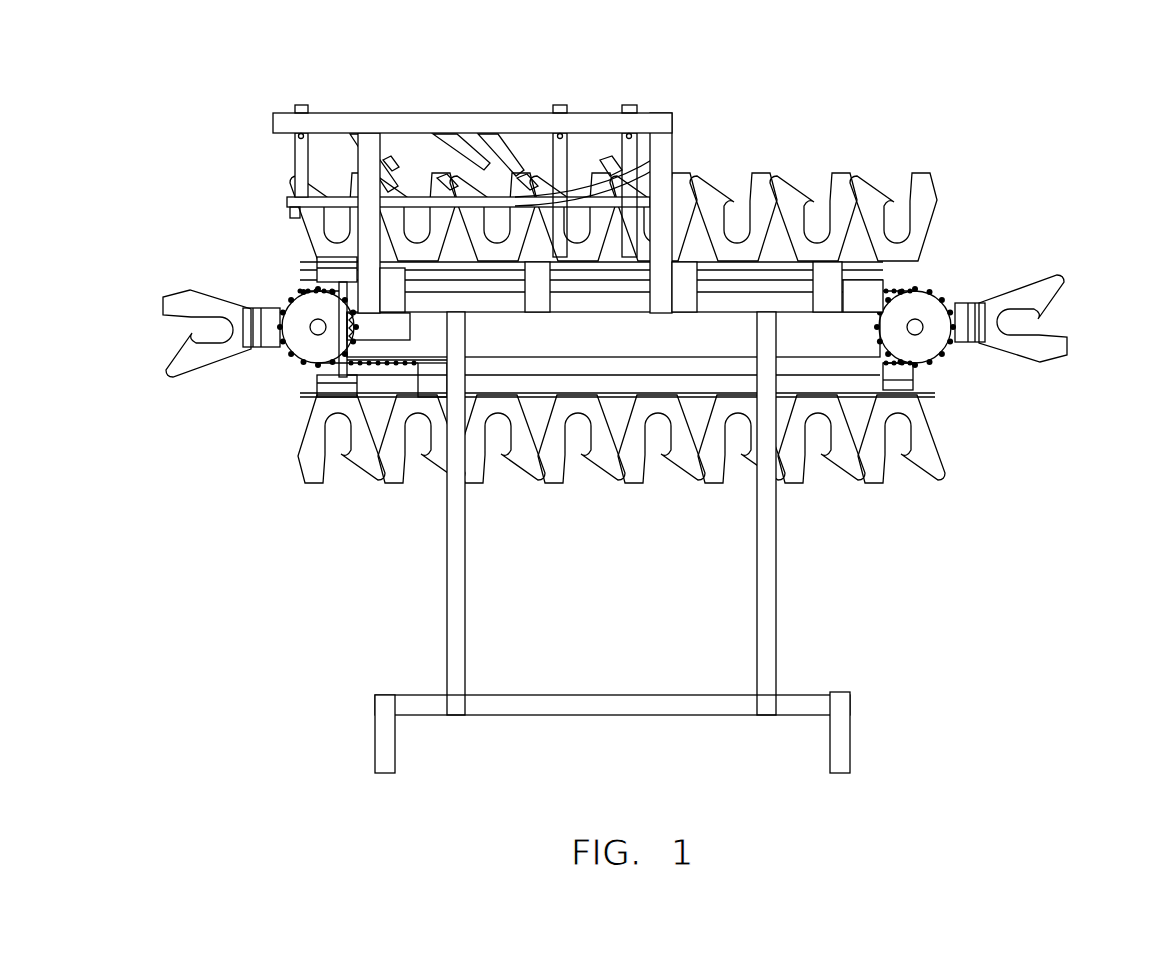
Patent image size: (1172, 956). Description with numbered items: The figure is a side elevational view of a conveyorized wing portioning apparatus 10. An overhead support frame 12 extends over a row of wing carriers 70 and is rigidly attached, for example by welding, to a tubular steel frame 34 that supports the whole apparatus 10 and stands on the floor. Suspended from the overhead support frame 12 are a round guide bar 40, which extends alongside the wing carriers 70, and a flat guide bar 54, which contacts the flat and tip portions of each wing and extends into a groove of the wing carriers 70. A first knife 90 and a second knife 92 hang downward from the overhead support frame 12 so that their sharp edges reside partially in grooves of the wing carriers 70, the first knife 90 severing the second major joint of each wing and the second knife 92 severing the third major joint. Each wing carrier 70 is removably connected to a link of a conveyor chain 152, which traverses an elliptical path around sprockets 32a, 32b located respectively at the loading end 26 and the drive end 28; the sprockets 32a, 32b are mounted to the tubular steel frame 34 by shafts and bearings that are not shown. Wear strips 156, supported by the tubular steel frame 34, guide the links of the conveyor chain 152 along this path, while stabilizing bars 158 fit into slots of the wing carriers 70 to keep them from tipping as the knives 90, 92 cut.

The wing portioning apparatus 10 is at (710, 68).
The overhead support frame 12 is at (280, 100).
The loading end 26 is at (1087, 318).
The drive end 28 is at (137, 333).
The sprocket 32a is at (923, 337).
The sprocket 32b is at (313, 347).
The tubular steel frame 34 is at (677, 152).
The round guide bar 40 is at (597, 167).
The flat guide bar 54 is at (288, 213).
The wing carriers 70 is at (438, 178).
The first knife 90 is at (522, 177).
The second knife 92 is at (398, 180).
The conveyor chain 152 is at (943, 283).
The wear strips 156 is at (862, 278).
The stabilizing bars 158 is at (775, 258).